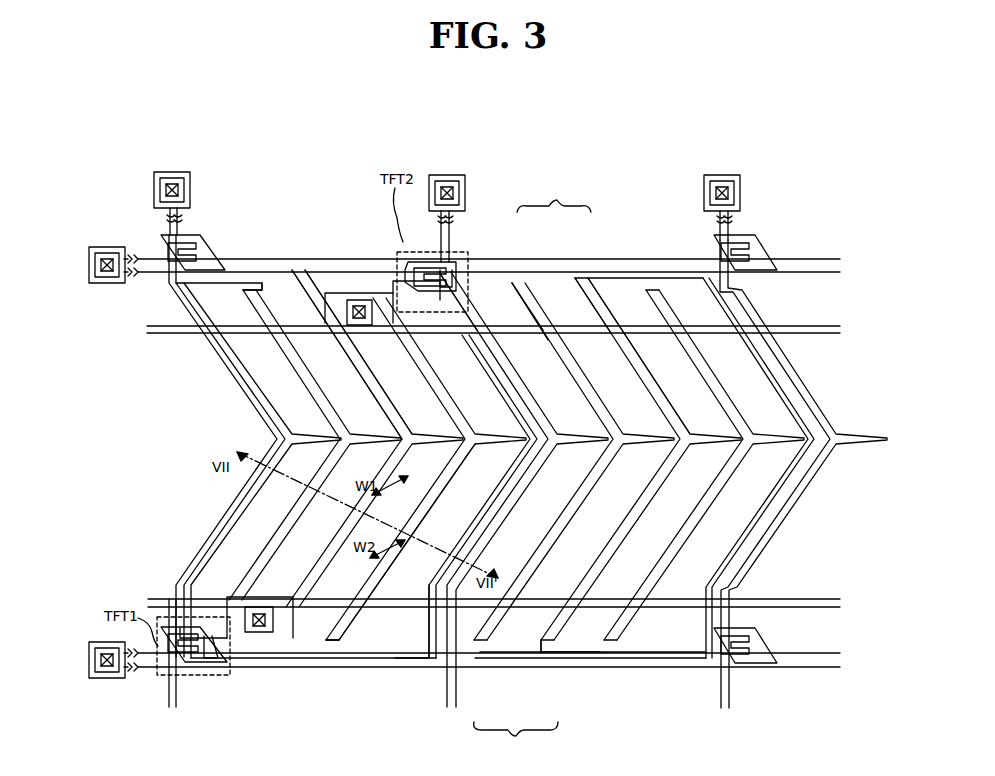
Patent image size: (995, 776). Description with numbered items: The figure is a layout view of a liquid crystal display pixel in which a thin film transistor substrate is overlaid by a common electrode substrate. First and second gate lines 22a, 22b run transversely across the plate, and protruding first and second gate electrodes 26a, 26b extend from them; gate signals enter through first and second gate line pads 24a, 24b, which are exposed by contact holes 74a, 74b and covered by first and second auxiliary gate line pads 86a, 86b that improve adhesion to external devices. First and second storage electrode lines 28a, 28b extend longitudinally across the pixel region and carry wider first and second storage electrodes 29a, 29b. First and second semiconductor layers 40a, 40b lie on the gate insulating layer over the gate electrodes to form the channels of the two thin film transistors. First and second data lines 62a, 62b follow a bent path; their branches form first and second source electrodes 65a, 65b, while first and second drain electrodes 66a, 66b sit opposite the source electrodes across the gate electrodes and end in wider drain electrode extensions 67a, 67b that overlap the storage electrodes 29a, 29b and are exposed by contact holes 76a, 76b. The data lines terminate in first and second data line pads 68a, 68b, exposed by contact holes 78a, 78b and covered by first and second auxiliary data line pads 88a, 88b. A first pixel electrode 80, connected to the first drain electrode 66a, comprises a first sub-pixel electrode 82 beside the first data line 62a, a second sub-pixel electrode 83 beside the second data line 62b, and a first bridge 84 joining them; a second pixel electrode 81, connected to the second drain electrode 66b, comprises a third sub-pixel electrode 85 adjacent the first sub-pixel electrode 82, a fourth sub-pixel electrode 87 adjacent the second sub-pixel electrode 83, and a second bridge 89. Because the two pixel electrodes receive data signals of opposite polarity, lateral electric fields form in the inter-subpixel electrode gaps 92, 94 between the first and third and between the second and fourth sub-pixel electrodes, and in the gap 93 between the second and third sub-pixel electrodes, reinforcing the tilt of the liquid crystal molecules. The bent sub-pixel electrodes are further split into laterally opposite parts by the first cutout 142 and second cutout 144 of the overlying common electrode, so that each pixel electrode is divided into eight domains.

The first gate line 22a is at (355, 668).
The second gate line 22b is at (659, 258).
The first gate line pad 24a is at (94, 650).
The second gate line pad 24b is at (90, 268).
The first gate electrode 26a is at (172, 601).
The second gate electrode 26b is at (458, 281).
The first storage electrode line 28a is at (318, 607).
The second storage electrode line 28b is at (178, 335).
The first storage electrode 29a is at (337, 640).
The second storage electrode 29b is at (320, 318).
The first semiconductor layer 40a is at (172, 682).
The second semiconductor layer 40b is at (424, 252).
The first data line 62a is at (213, 533).
The second data line 62b is at (528, 394).
The first source electrode 65a is at (170, 652).
The second source electrode 65b is at (426, 267).
The first drain electrode 66a is at (214, 659).
The second drain electrode 66b is at (444, 293).
The first drain electrode extension 67a is at (254, 640).
The second drain electrode extension 67b is at (392, 282).
The first data line pad 68a is at (163, 176).
The second data line pad 68b is at (454, 181).
The contact hole 74a is at (102, 662).
The contact hole 74b is at (104, 270).
The contact hole 76a is at (260, 632).
The contact hole 76b is at (358, 320).
The contact hole 78a is at (178, 191).
The contact hole 78b is at (455, 191).
The first pixel electrode 80 is at (554, 197).
The second pixel electrode 81 is at (516, 736).
The first sub-pixel electrode 82 is at (518, 298).
The second sub-pixel electrode 83 is at (572, 270).
The first bridge 84 is at (311, 266).
The third sub-pixel electrode 85 is at (458, 656).
The first auxiliary gate line pad 86a is at (90, 643).
The second auxiliary gate line pad 86b is at (90, 251).
The fourth sub-pixel electrode 87 is at (550, 648).
The first auxiliary data line pad 88a is at (183, 172).
The second auxiliary data line pad 88b is at (433, 175).
The second bridge 89 is at (509, 658).
The inter-subpixel electrode gap 92 is at (410, 424).
The inter-subpixel electrode gap 93 is at (519, 382).
The inter-subpixel electrode gap 94 is at (654, 391).
The first cutout 142 is at (246, 286).
The second cutout 144 is at (382, 654).